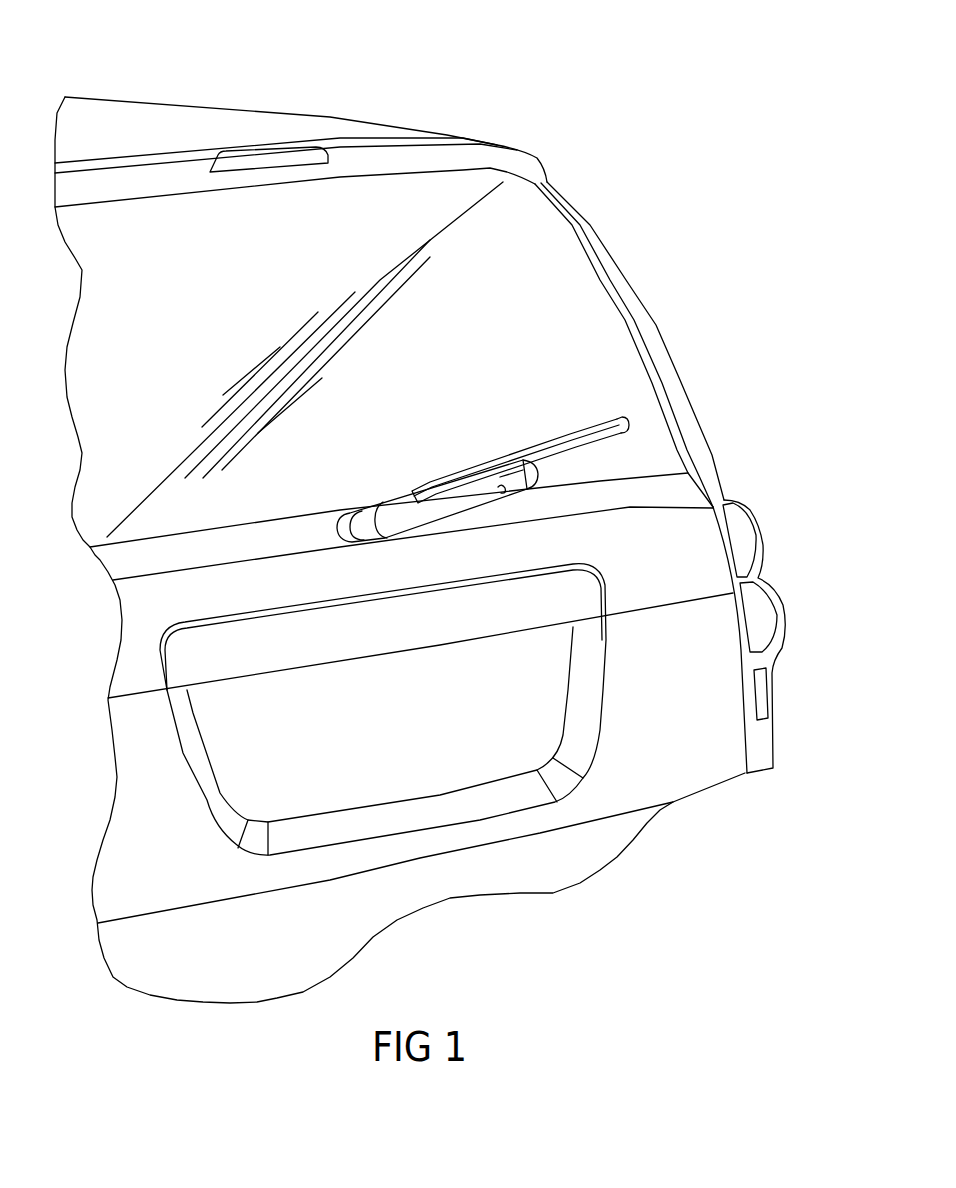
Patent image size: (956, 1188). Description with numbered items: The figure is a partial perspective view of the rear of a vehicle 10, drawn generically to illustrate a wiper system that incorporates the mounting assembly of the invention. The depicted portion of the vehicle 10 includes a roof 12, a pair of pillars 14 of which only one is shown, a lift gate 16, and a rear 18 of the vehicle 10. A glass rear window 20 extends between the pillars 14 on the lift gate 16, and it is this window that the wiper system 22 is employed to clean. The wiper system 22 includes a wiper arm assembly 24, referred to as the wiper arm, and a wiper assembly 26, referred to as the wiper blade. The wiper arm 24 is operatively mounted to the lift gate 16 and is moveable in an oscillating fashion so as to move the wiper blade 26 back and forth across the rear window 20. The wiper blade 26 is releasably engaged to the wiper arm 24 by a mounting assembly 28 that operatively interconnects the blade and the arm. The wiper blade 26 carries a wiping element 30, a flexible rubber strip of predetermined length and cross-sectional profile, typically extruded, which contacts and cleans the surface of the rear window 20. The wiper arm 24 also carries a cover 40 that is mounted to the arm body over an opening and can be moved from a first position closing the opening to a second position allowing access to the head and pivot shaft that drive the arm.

The vehicle 10 is at (463, 100).
The roof 12 is at (252, 117).
The pillars 14 is at (603, 262).
The lift gate 16 is at (700, 515).
The rear 18 is at (758, 743).
The glass rear window 20 is at (482, 366).
The wiper system 22 is at (399, 437).
The wiper arm assembly 24 is at (388, 497).
The wiper assembly 26 is at (603, 423).
The mounting assembly 28 is at (510, 460).
The wiping element 30 is at (575, 432).
The cover 40 is at (360, 540).